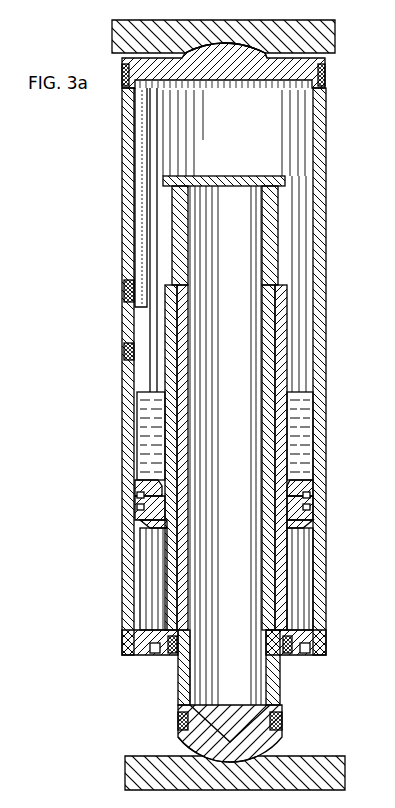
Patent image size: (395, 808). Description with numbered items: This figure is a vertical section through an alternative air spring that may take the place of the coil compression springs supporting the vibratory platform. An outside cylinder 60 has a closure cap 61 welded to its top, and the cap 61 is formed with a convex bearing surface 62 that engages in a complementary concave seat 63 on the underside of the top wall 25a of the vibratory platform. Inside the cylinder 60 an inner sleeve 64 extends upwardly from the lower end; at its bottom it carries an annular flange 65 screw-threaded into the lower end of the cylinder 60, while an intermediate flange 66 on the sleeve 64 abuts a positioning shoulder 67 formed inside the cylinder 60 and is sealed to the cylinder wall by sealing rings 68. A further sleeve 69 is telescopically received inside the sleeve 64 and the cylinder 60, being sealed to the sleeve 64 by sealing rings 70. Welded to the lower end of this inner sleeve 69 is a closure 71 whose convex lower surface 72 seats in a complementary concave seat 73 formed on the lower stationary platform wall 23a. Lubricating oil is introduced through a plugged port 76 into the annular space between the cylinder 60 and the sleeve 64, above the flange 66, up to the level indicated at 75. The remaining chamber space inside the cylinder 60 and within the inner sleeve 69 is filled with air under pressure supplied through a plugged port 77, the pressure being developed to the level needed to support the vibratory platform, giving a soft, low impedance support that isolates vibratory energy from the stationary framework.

The top wall of the vibratory platform 25a is at (332, 44).
The closure cap 61 is at (327, 67).
The convex bearing surface 62 is at (224, 47).
The concave seat 63 is at (234, 50).
The outside cylinder 60 is at (320, 198).
The inner sleeve 69 is at (278, 267).
The plugged port 77 is at (128, 282).
The plugged port 76 is at (130, 349).
The oil level 75 is at (143, 389).
The sealing rings 70 is at (288, 405).
The inner sleeve 64 is at (285, 448).
The positioning shoulder 67 is at (310, 486).
The sealing rings 68 is at (306, 511).
The intermediate flange 66 is at (312, 534).
The annular flange 65 is at (296, 654).
The closure 71 is at (281, 706).
The convex lower surface 72 is at (282, 748).
The concave seat 73 is at (192, 750).
The lower stationary platform wall 23a is at (138, 760).